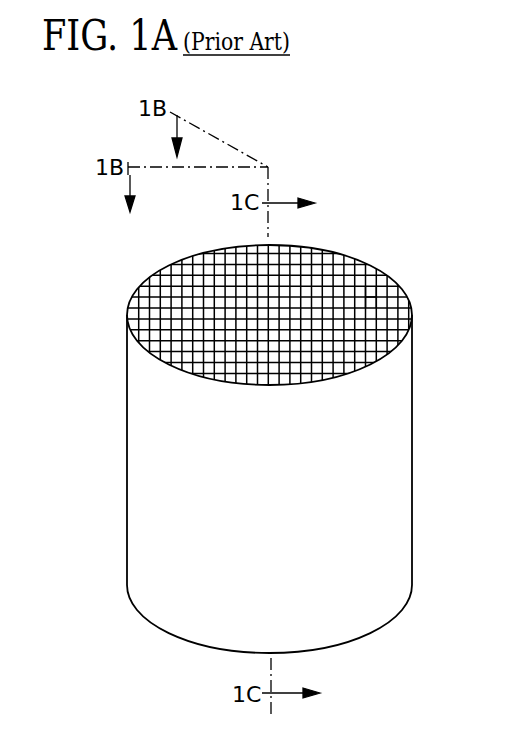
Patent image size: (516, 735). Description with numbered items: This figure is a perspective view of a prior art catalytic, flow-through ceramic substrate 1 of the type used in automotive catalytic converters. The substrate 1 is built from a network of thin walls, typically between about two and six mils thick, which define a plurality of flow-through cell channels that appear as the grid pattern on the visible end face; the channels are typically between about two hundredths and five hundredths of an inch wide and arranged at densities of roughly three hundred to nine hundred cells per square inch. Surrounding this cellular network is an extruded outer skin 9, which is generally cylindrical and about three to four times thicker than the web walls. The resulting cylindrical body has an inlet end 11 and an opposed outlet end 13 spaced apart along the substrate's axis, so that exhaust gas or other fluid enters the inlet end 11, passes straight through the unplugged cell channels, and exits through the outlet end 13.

The ceramic substrate 1 is at (121, 257).
The extruded outer skin 9 is at (398, 396).
The inlet end 11 is at (116, 302).
The outlet end 13 is at (164, 650).